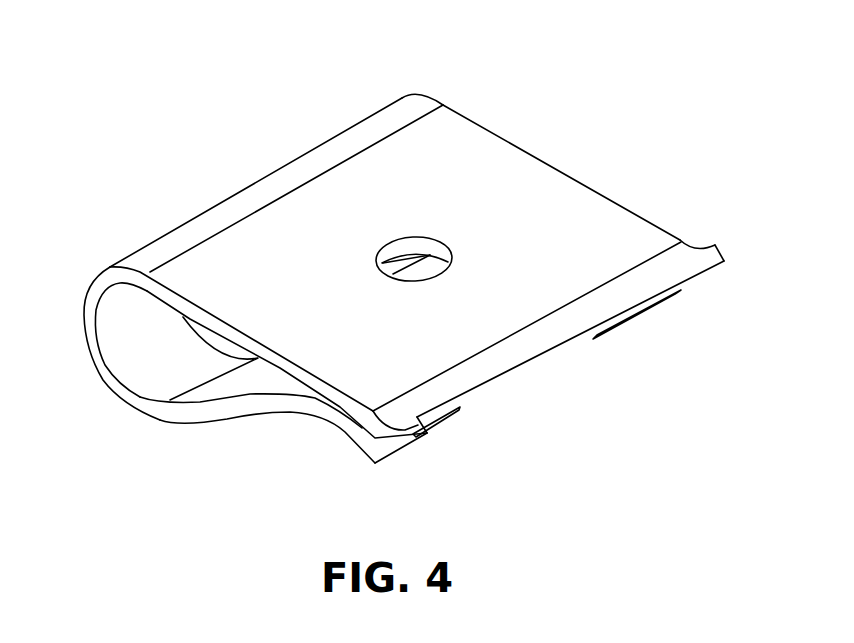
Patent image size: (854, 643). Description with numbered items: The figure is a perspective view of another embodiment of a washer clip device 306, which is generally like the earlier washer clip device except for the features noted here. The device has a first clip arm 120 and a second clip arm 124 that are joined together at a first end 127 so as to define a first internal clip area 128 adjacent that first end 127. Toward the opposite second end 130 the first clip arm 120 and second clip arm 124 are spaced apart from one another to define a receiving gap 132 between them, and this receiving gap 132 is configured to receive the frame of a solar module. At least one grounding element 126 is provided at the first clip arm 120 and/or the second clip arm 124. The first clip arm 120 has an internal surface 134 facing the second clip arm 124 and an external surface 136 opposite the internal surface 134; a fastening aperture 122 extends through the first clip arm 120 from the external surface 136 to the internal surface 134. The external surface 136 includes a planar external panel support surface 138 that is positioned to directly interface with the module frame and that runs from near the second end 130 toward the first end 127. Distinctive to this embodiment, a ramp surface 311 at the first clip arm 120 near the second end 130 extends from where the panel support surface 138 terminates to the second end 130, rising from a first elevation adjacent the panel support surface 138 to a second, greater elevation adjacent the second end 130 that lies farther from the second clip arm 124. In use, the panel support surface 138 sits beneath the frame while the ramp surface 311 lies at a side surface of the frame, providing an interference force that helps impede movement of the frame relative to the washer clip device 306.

The washer clip device 306 is at (243, 70).
The first clip arm 120 is at (311, 346).
The fastening aperture 122 is at (384, 228).
The second clip arm 124 is at (237, 414).
The grounding element 126 is at (384, 397).
The first end 127 is at (74, 294).
The first internal clip area 128 is at (157, 371).
The second end 130 is at (514, 378).
The receiving gap 132 is at (349, 454).
The internal surface 134 is at (222, 322).
The external surface 136 is at (170, 288).
The planar external panel support surface 138 is at (507, 163).
The ramp surface 311 is at (512, 326).